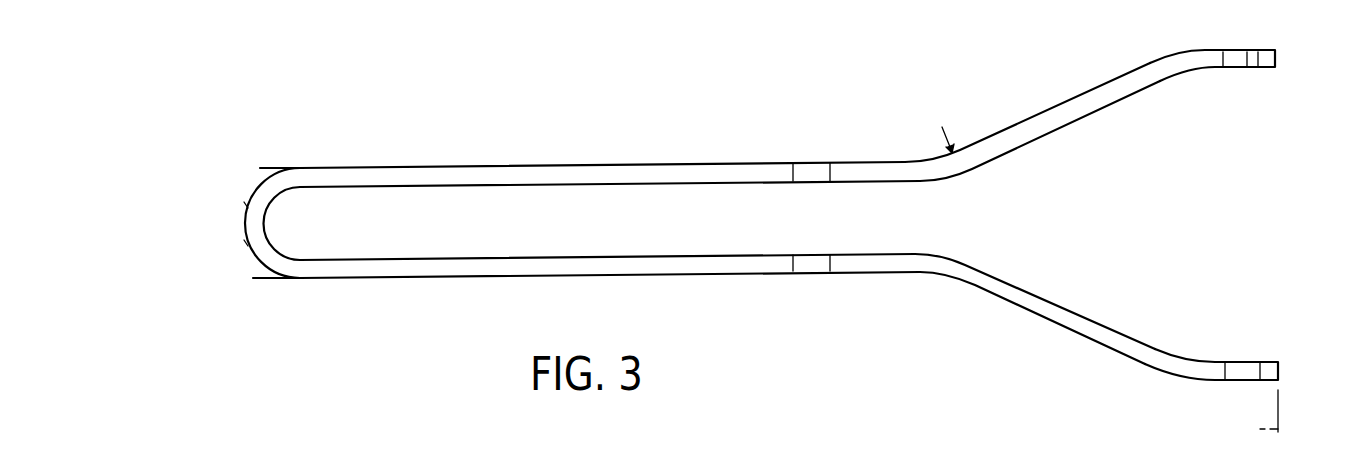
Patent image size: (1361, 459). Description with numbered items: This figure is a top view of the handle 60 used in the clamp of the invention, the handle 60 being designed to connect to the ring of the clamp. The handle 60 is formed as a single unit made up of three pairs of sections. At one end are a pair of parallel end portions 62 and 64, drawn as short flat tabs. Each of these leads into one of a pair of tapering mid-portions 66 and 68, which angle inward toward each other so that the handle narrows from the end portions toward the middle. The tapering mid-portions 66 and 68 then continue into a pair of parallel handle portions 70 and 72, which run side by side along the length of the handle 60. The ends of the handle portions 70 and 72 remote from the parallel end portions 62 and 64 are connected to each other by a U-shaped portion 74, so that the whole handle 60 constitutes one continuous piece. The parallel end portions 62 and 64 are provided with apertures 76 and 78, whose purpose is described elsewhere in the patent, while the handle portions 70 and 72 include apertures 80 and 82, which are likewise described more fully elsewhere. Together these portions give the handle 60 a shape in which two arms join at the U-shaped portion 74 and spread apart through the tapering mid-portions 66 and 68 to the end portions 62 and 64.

The handle 60 is at (353, 130).
The parallel end portion 62 is at (1202, 67).
The parallel end portion 64 is at (1278, 365).
The tapering mid-portion 66 is at (1055, 107).
The tapering mid-portion 68 is at (1050, 305).
The handle portion 70 is at (502, 168).
The handle portion 72 is at (417, 272).
The U-shaped portion 74 is at (252, 220).
The aperture 76 is at (1247, 67).
The aperture 78 is at (1240, 360).
The aperture 80 is at (812, 168).
The aperture 82 is at (815, 272).